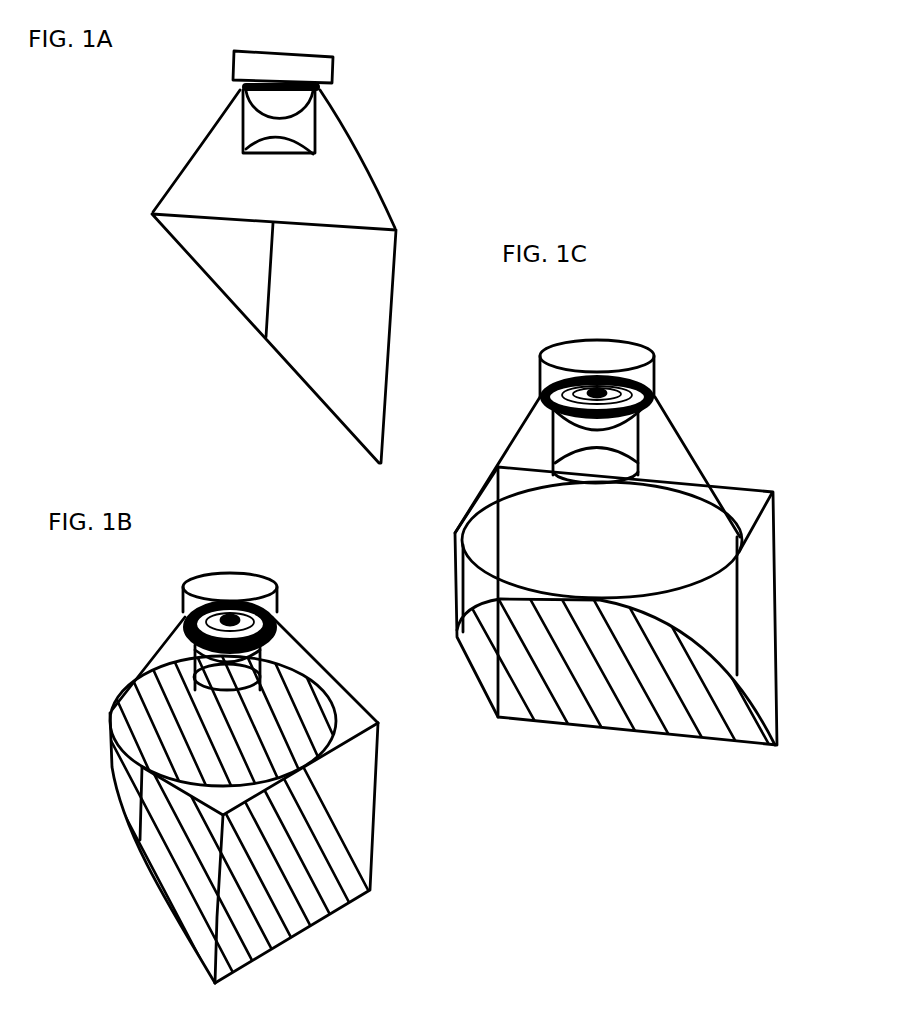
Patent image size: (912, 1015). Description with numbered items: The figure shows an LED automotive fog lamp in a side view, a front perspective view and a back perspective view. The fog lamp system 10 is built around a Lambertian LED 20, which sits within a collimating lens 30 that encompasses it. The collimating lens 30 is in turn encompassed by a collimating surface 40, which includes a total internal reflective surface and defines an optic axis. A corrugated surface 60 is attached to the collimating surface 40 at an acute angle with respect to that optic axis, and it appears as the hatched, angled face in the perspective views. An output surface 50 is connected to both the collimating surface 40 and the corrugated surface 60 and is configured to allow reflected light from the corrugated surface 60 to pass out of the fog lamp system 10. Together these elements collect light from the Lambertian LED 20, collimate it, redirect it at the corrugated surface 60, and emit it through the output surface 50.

In FIG. 1A, the fog lamp system 10 is at (298, 317).
In FIG. 1B, the fog lamp system 10 is at (173, 888).
In FIG. 1C, the fog lamp system 10 is at (760, 607).
In FIG. 1A, the Lambertian LED 20 is at (283, 100).
In FIG. 1B, the Lambertian LED 20 is at (247, 605).
In FIG. 1C, the Lambertian LED 20 is at (600, 382).
In FIG. 1A, the collimating lens 30 is at (300, 147).
In FIG. 1A, the collimating surface 40 is at (193, 153).
In FIG. 1B, the collimating surface 40 is at (293, 650).
In FIG. 1C, the collimating surface 40 is at (673, 453).
In FIG. 1B, the output surface 50 is at (350, 795).
In FIG. 1C, the corrugated surface 60 is at (583, 657).